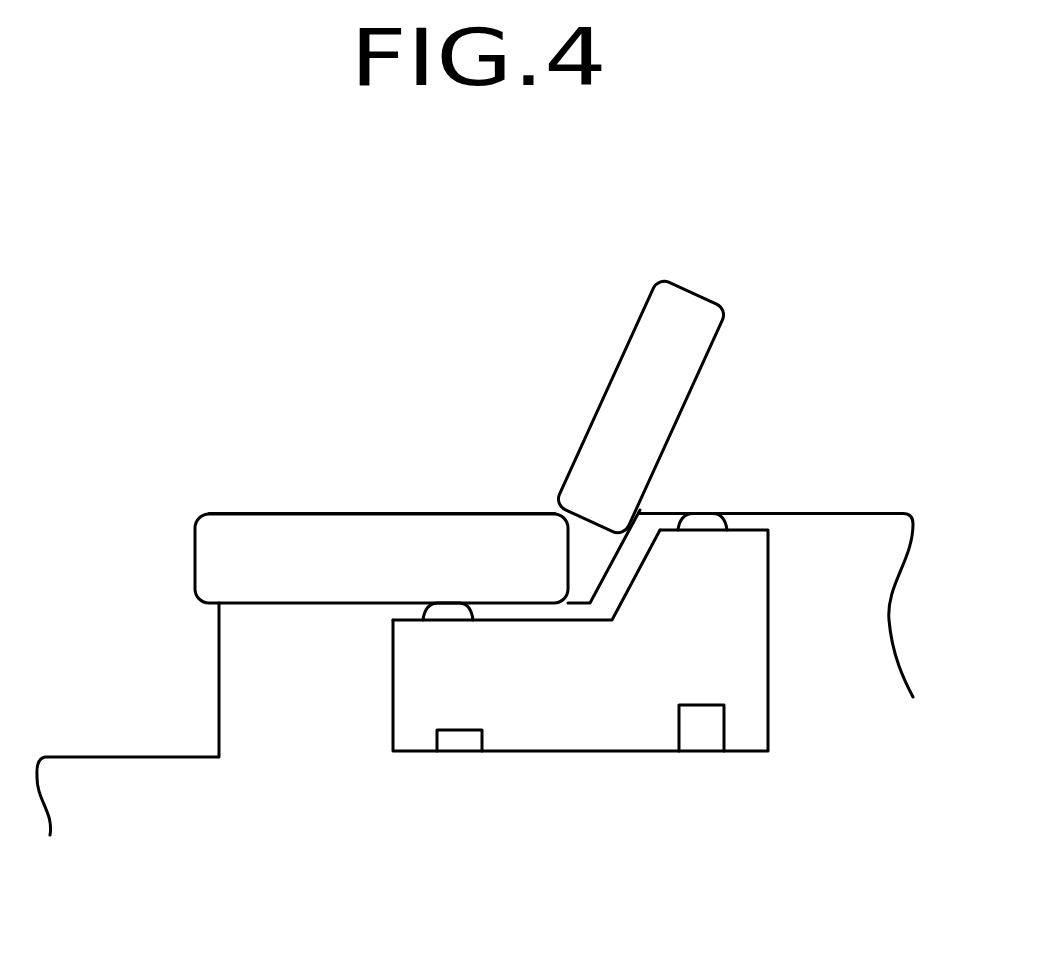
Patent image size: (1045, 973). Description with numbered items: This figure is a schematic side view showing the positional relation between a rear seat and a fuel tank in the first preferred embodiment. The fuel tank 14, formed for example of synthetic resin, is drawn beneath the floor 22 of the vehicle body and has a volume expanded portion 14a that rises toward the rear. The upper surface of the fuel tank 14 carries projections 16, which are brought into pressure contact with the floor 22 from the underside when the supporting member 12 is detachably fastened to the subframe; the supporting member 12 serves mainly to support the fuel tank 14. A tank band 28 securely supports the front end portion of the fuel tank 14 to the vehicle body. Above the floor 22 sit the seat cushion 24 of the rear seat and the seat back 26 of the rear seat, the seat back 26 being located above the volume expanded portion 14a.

The supporting member 12 is at (703, 749).
The fuel tank 14 is at (752, 655).
The volume expanded portion 14a is at (668, 550).
The projections 16 is at (443, 604).
The floor 22 is at (842, 525).
The seat cushion 24 is at (305, 527).
The seat back 26 is at (683, 298).
The tank band 28 is at (465, 749).